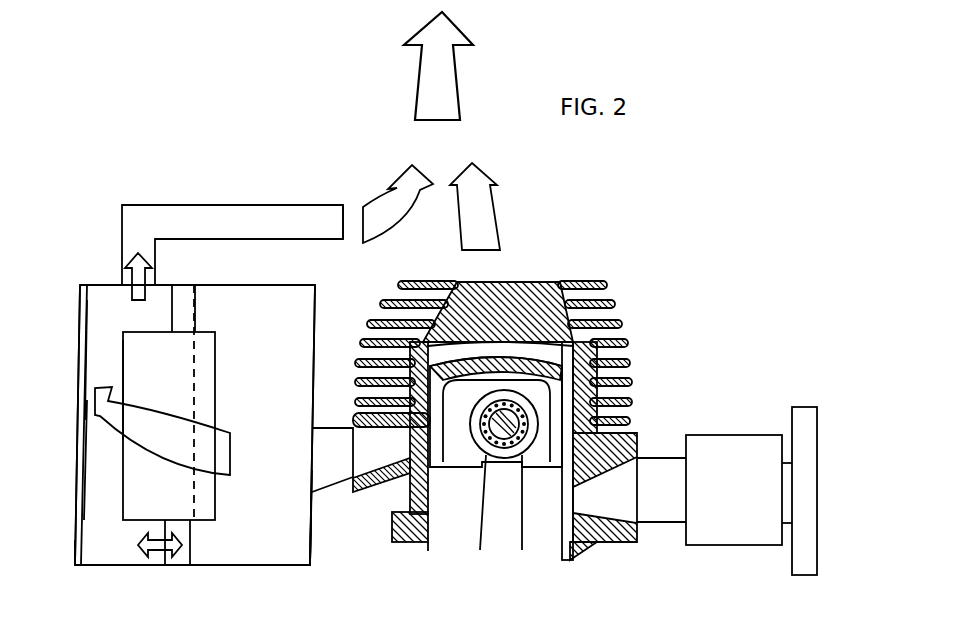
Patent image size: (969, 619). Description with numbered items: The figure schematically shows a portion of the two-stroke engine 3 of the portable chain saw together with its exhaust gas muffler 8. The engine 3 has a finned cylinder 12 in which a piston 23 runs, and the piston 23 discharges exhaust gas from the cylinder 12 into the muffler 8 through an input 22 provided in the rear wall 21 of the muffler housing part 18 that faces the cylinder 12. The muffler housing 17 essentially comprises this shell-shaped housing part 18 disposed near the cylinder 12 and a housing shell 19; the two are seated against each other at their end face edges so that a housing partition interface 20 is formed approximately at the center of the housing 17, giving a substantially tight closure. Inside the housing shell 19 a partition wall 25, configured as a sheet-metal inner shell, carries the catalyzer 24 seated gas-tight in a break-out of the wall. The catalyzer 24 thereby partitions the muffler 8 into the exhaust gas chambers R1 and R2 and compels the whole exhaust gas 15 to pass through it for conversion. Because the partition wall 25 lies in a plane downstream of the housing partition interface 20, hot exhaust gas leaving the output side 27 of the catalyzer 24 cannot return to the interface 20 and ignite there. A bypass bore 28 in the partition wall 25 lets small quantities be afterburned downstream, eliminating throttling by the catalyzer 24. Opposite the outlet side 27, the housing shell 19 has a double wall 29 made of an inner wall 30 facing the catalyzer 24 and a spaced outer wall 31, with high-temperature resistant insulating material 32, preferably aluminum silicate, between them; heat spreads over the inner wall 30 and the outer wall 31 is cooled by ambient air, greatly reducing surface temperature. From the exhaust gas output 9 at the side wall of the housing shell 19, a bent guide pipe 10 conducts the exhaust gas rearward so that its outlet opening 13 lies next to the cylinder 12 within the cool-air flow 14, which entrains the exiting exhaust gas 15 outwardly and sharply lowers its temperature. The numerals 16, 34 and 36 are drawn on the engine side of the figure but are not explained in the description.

The two-stroke engine 3 is at (606, 578).
The exhaust gas muffler 8 is at (121, 582).
The exhaust gas output 9 is at (106, 278).
The pipe 10 is at (193, 204).
The cylinder 12 is at (583, 282).
The outlet opening 13 is at (347, 218).
The cool-air flow 14 is at (498, 233).
The exhaust gas 15 is at (397, 229).
The exhaust port 16 is at (629, 526).
The housing 17 is at (230, 567).
The shell-shaped housing part 18 is at (268, 568).
The housing shell 19 is at (100, 567).
The housing partition interface 20 is at (196, 301).
The rear wall 21 is at (312, 532).
The input 22 is at (313, 447).
The piston 23 is at (548, 470).
The catalyzer 24 is at (217, 357).
The partition wall 25 is at (172, 315).
The output side 27 is at (123, 373).
The bypass bore 28 is at (173, 556).
The double wall 29 is at (72, 565).
The inner wall 30 is at (83, 457).
The outer wall 31 is at (74, 480).
The insulating material 32 is at (80, 442).
The carburetor 34 is at (751, 513).
The connecting rod 36 is at (500, 537).
The exhaust gas chamber R1 is at (292, 551).
The exhaust gas chamber R2 is at (100, 363).